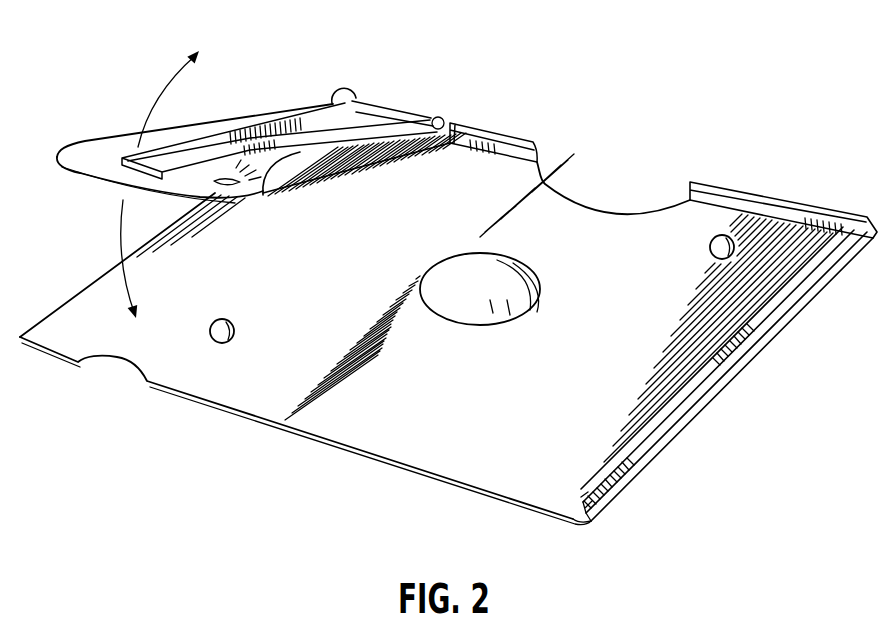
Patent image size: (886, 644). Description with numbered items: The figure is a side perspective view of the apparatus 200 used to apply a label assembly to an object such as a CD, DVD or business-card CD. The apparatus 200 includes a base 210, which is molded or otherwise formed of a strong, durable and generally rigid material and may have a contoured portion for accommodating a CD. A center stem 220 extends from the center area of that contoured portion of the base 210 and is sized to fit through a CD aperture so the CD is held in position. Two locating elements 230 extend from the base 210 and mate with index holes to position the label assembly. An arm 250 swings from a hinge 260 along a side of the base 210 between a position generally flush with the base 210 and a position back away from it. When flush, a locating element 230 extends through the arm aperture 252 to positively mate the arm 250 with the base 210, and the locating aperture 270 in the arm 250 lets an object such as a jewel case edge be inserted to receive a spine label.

The apparatus 200 is at (641, 104).
The base 210 is at (397, 445).
The center stem 220 is at (510, 317).
The locating element 230 is at (711, 249).
The arm 250 is at (93, 167).
The arm aperture 252 is at (263, 193).
The hinge 260 is at (413, 110).
The locating aperture 270 is at (264, 133).